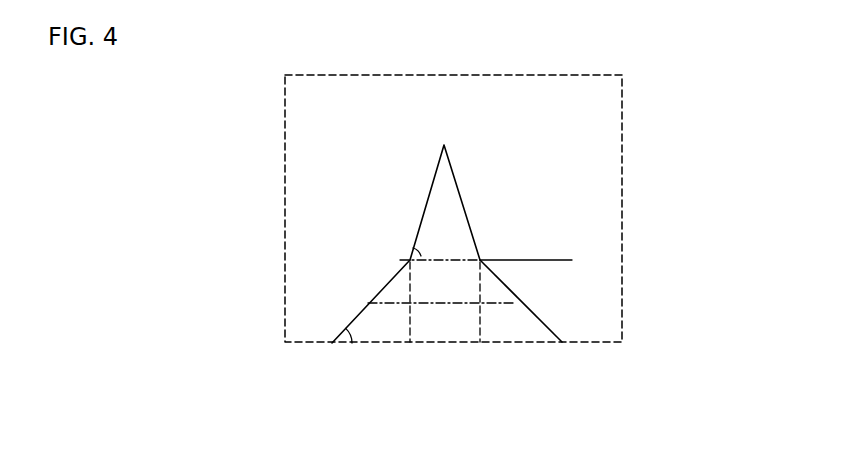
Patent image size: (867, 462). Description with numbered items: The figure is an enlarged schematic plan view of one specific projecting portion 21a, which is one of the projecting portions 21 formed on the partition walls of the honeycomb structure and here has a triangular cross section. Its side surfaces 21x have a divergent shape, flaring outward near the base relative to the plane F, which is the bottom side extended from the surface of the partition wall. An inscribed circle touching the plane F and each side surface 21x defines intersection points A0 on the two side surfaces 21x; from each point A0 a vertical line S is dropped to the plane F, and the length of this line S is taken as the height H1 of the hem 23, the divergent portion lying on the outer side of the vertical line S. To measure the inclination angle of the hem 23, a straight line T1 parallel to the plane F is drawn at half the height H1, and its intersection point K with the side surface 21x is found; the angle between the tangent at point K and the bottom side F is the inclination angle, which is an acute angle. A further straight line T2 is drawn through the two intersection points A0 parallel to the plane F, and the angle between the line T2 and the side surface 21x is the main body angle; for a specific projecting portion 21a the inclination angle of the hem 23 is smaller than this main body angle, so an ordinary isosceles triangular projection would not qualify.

The projecting portion 21 is at (463, 163).
The specific projecting portion 21a is at (367, 355).
The hem 23 is at (387, 310).
The side surface 21x is at (422, 215).
The straight line T2 is at (450, 253).
The intersection point A0 is at (410, 260).
The intersection point K is at (368, 303).
The plane F is at (417, 343).
The vertical line S is at (482, 318).
The straight line T1 is at (513, 307).
The height of hem H1 is at (566, 260).